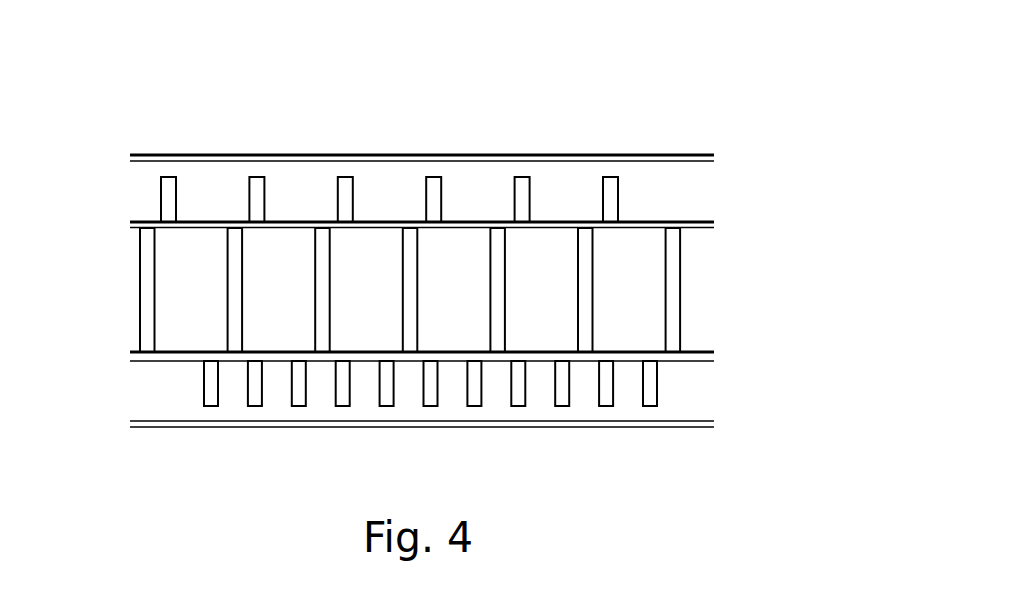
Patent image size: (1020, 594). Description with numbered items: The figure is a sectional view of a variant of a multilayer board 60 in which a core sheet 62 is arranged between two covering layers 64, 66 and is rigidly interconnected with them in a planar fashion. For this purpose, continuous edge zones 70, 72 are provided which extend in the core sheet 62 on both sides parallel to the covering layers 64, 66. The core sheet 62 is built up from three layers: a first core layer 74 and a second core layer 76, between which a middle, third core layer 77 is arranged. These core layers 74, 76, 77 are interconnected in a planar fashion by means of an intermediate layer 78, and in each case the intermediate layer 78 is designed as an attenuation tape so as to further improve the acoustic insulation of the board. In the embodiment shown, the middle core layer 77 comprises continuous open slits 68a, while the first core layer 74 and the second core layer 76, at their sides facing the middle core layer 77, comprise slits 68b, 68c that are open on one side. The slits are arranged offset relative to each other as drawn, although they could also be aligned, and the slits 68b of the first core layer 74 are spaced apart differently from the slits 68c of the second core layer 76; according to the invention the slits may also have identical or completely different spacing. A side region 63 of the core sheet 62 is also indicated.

The multilayer board 60 is at (510, 86).
The core sheet 62 is at (762, 286).
The end wall of core 63 is at (696, 293).
The covering layer 64 is at (677, 158).
The covering layer 66 is at (688, 422).
The continuous open slits 68a is at (497, 285).
The slits 68b is at (348, 175).
The slits 68c is at (343, 403).
The continuous edge zone 70 is at (294, 170).
The continuous edge zone 72 is at (237, 411).
The first core layer 74 is at (140, 185).
The second core layer 76 is at (148, 392).
The middle core layer 77 is at (130, 288).
The intermediate layer 78 is at (133, 225).